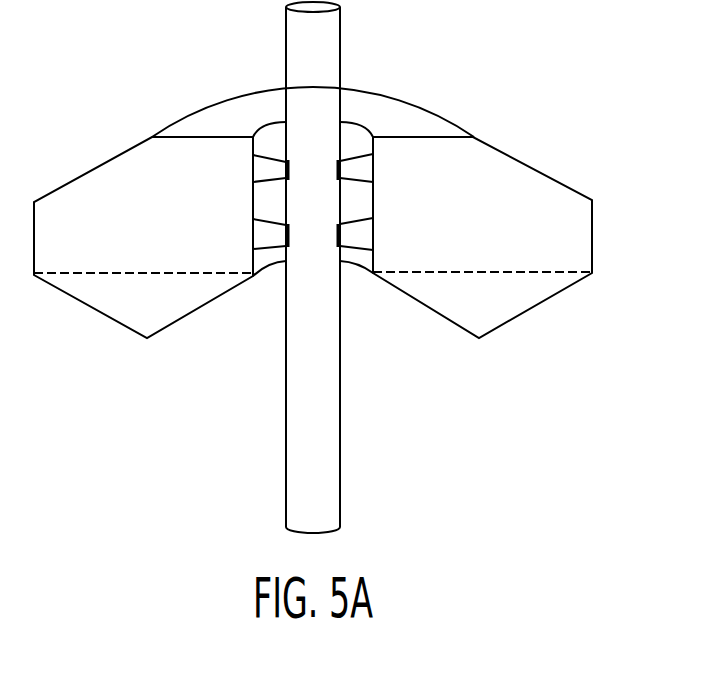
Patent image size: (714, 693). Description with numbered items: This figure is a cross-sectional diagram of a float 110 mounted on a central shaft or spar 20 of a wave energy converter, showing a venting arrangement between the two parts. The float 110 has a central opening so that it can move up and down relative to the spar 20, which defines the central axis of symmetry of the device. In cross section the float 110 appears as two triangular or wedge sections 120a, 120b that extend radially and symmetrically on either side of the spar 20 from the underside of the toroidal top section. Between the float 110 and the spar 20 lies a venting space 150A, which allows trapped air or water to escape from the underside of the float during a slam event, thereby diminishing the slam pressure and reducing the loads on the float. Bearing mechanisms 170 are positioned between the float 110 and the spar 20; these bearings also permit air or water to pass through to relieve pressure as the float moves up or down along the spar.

The spar 20 is at (328, 37).
The float 110 is at (552, 190).
The triangular section 120a is at (142, 313).
The triangular section 120b is at (462, 308).
The venting space 150A is at (358, 143).
The bearing mechanism 170 is at (284, 167).